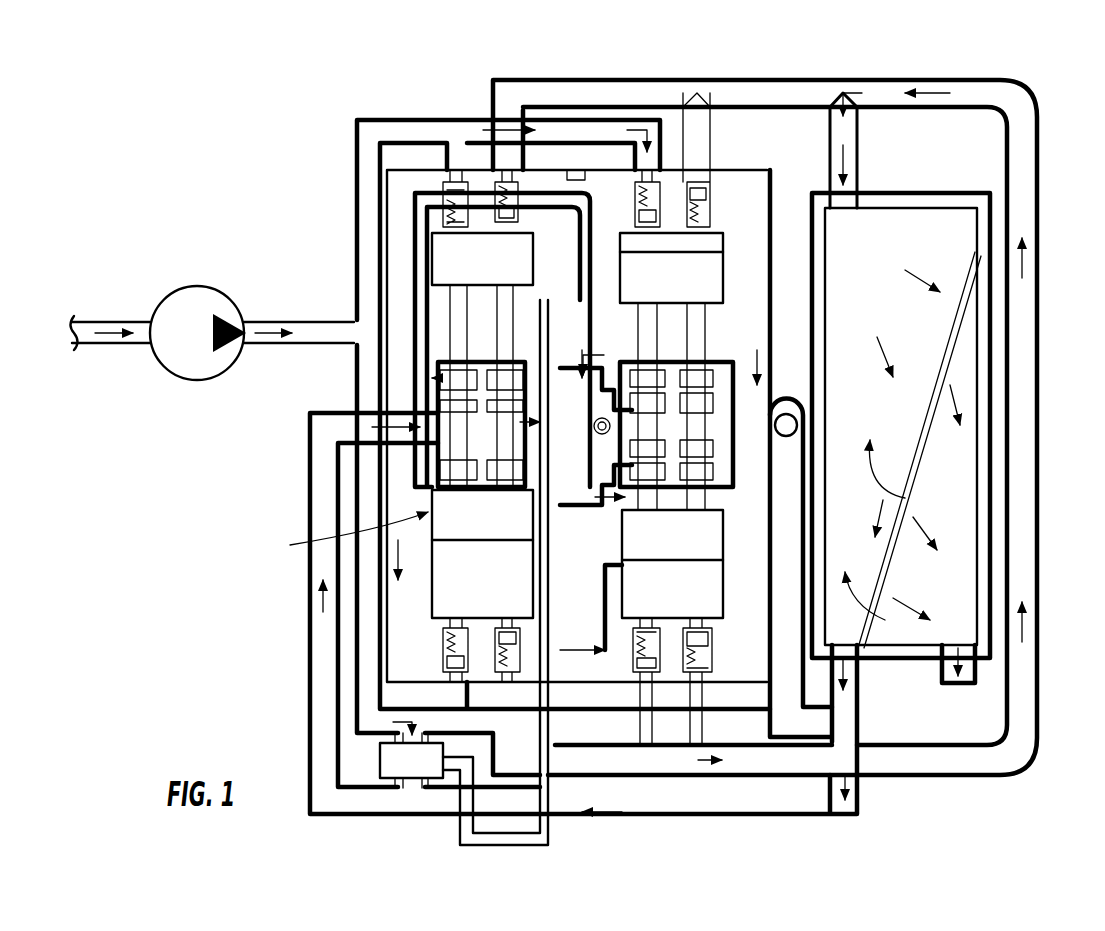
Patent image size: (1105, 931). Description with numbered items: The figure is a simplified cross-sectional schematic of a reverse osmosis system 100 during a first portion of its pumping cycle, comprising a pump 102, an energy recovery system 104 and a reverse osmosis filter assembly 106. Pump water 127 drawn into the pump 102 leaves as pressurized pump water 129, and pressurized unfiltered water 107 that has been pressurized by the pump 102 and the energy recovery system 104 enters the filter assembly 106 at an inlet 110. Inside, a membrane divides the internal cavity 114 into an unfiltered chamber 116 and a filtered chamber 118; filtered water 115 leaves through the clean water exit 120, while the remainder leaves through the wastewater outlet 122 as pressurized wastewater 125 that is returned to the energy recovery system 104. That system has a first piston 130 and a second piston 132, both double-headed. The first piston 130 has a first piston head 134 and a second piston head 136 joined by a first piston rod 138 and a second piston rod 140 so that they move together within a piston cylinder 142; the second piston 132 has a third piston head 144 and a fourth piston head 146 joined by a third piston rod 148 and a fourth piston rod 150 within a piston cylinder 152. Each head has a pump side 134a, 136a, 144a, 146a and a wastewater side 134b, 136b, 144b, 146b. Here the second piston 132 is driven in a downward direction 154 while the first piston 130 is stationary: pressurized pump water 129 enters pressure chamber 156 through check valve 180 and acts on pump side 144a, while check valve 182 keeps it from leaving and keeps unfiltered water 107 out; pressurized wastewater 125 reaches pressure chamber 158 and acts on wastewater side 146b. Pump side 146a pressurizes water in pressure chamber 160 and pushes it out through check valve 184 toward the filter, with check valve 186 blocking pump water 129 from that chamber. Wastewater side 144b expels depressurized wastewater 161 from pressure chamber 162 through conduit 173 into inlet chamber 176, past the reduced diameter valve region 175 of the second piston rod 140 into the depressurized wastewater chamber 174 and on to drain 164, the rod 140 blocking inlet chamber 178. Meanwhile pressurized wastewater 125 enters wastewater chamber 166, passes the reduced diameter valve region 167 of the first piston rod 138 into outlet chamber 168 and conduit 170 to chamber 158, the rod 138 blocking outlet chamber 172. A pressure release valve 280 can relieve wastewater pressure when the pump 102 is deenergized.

The reverse osmosis system 100 is at (243, 134).
The pump 102 is at (244, 280).
The energy recovery system 104 is at (757, 132).
The reverse osmosis filter assembly 106 is at (942, 158).
The pressurized unfiltered water 107 is at (905, 272).
The inlet 110 is at (850, 185).
The internal cavity 114 is at (900, 498).
The filtered water 115 is at (915, 518).
The unfiltered chamber 116 is at (880, 607).
The filtered chamber 118 is at (965, 565).
The clean water exit 120 is at (982, 672).
The wastewater outlet 122 is at (858, 665).
The pressurized wastewater 125 is at (318, 438).
The pump inlet 127 is at (118, 320).
The pressurized pump water 129 is at (270, 320).
The first piston 130 is at (341, 532).
The second piston 132 is at (735, 514).
The first piston head 134 is at (442, 262).
The pump side 134a is at (436, 233).
The wastewater side 134b is at (546, 330).
The second piston head 136 is at (448, 518).
The pump side 136a is at (460, 603).
The wastewater side 136b is at (484, 542).
The first piston rod 138 is at (470, 380).
The second piston rod 140 is at (505, 305).
The piston cylinder 142 is at (450, 575).
The third piston head 144 is at (720, 272).
The pump side 144a is at (708, 248).
The wastewater side 144b is at (652, 330).
The fourth piston head 146 is at (690, 548).
The pump side 146a is at (660, 565).
The wastewater side 146b is at (648, 544).
The third piston rod 148 is at (705, 328).
The fourth piston rod 150 is at (650, 350).
The piston cylinder 152 is at (695, 580).
The downward direction 154 is at (763, 360).
The pressure chamber 156 is at (720, 245).
The pressure chamber 158 is at (768, 490).
The pressure chamber 160 is at (700, 600).
The depressurized wastewater 161 is at (510, 485).
The pressure chamber 162 is at (622, 320).
The drain 164 is at (582, 345).
The wastewater chamber 166 is at (440, 455).
The reduced diameter valve region 167 is at (455, 325).
The outlet chamber 168 is at (445, 377).
The conduit 170 is at (400, 480).
The outlet chamber 172 is at (400, 500).
The conduit 173 is at (566, 420).
The depressurized wastewater chamber 174 is at (405, 430).
The reduced diameter valve region 175 is at (492, 380).
The inlet chamber 176 is at (512, 320).
The inlet chamber 178 is at (470, 521).
The check valve 180 is at (652, 205).
The check valve 182 is at (700, 216).
The check valve 184 is at (702, 652).
The check valve 186 is at (640, 660).
The pressure release valve 280 is at (393, 782).